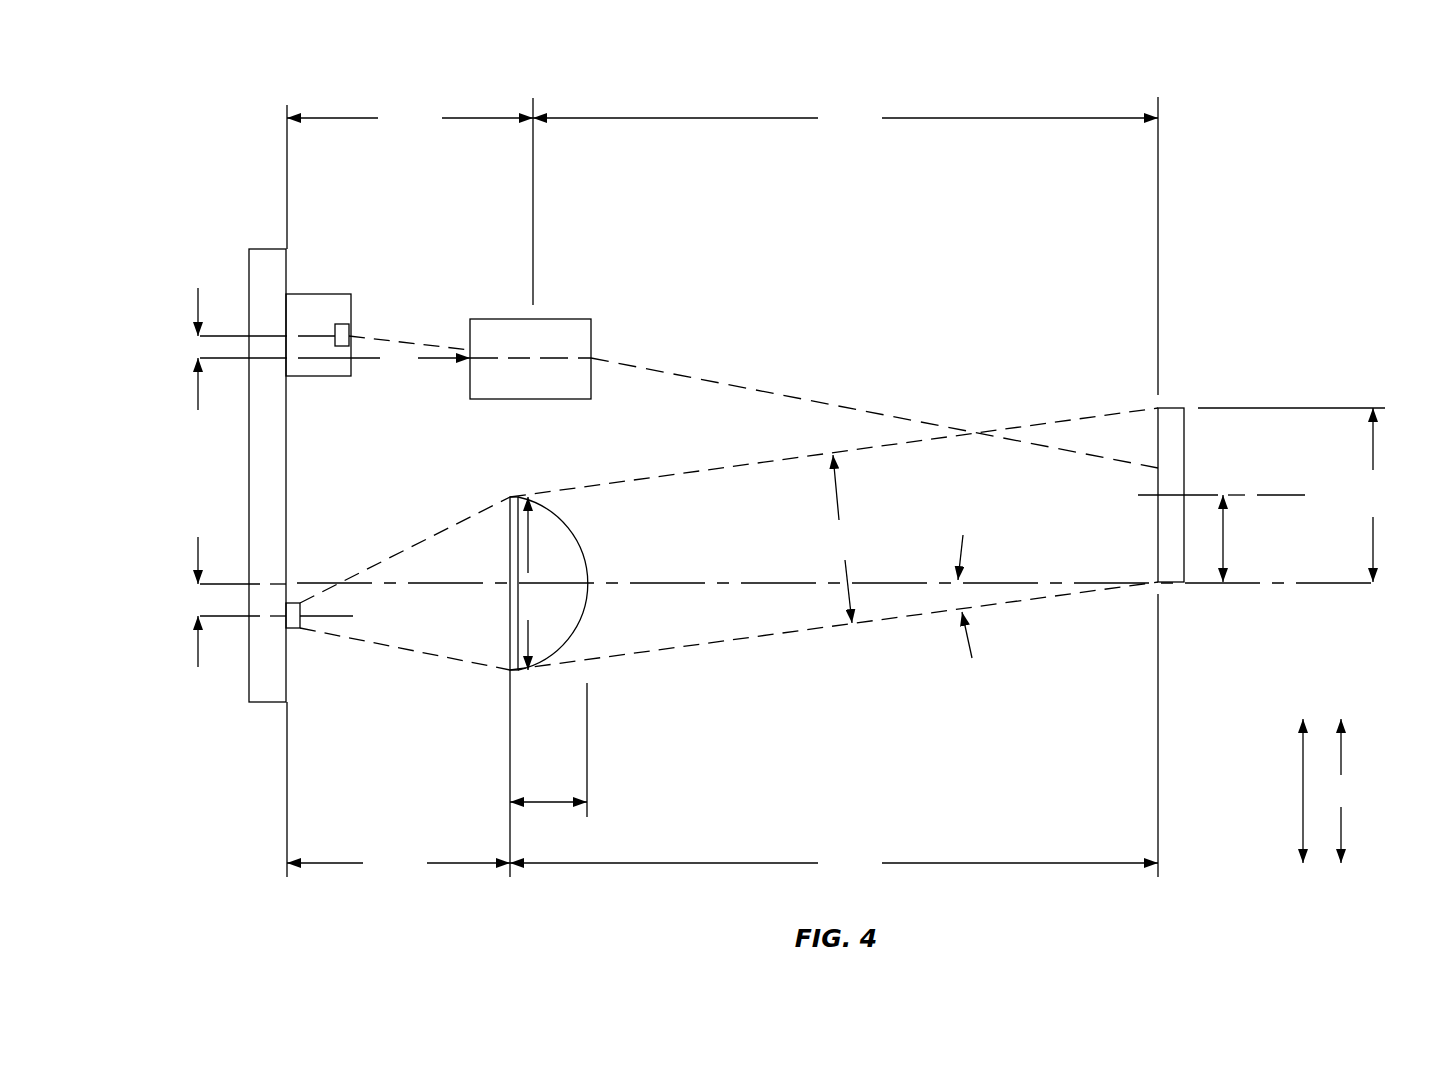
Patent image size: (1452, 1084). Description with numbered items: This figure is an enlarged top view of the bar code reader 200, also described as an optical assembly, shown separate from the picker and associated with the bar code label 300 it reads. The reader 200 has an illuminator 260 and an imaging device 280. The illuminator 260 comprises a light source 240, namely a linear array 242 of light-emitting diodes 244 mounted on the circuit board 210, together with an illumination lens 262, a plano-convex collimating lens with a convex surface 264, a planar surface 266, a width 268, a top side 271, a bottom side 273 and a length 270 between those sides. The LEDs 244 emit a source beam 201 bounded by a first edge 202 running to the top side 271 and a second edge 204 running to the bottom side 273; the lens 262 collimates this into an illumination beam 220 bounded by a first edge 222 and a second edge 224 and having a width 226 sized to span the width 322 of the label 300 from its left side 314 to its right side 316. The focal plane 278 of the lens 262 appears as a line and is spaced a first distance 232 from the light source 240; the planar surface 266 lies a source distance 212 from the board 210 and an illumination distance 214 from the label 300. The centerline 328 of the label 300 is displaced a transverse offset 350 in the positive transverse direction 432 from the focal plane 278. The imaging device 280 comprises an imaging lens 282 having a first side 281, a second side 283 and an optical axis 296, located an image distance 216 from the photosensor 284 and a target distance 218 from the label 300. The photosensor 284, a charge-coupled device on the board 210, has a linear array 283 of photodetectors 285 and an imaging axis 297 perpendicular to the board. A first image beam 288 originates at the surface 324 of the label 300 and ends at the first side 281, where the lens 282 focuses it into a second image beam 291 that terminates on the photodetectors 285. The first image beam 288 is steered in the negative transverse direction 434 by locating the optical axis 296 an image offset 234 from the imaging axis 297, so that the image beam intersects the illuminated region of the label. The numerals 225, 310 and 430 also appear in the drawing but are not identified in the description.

The bar code reader 200 is at (728, 266).
The source beam 201 is at (395, 555).
The first edge 202 is at (447, 530).
The second edge 204 is at (447, 660).
The circuit board 210 is at (249, 472).
The source distance 212 is at (398, 863).
The illumination distance 214 is at (834, 863).
The image distance 216 is at (410, 118).
The target distance 218 is at (845, 118).
The illumination beam 220 is at (700, 652).
The first edge 222 is at (745, 462).
The second edge 224 is at (765, 640).
The beam divergence angle 225 is at (968, 655).
The width 226 is at (840, 539).
The first distance 232 is at (198, 600).
The image offset 234 is at (200, 347).
The light source 240 is at (310, 568).
The linear array 242 is at (298, 645).
The light-emitting diodes 244 is at (340, 665).
The illuminator 260 is at (398, 741).
The illumination lens 262 is at (602, 607).
The convex surface 264 is at (588, 572).
The planar surface 266 is at (510, 630).
The width 268 is at (548, 802).
The length 270 is at (536, 583).
The top side 271 is at (514, 497).
The bottom side 273 is at (517, 672).
The focal plane 278 is at (755, 582).
The imaging device 280 is at (437, 225).
The first side 281 is at (593, 336).
The imaging lens 282 is at (575, 303).
The second side 283 is at (340, 320).
The photosensor 284 is at (318, 378).
The photodetectors 285 is at (383, 342).
The first image beam 288 is at (790, 395).
The second image beam 291 is at (423, 346).
The optical axis 296 is at (393, 362).
The imaging axis 297 is at (380, 337).
The bar code label 300 is at (1132, 375).
The mirror 310 is at (1158, 553).
The left side 314 is at (1170, 410).
The right side 316 is at (1170, 583).
The width 322 is at (1297, 495).
The surface 324 is at (1158, 521).
The centerline 328 is at (1297, 495).
The transverse offset 350 is at (1223, 540).
The total travel 430 is at (1303, 790).
The positive transverse direction 432 is at (1341, 760).
The negative transverse direction 434 is at (1341, 820).